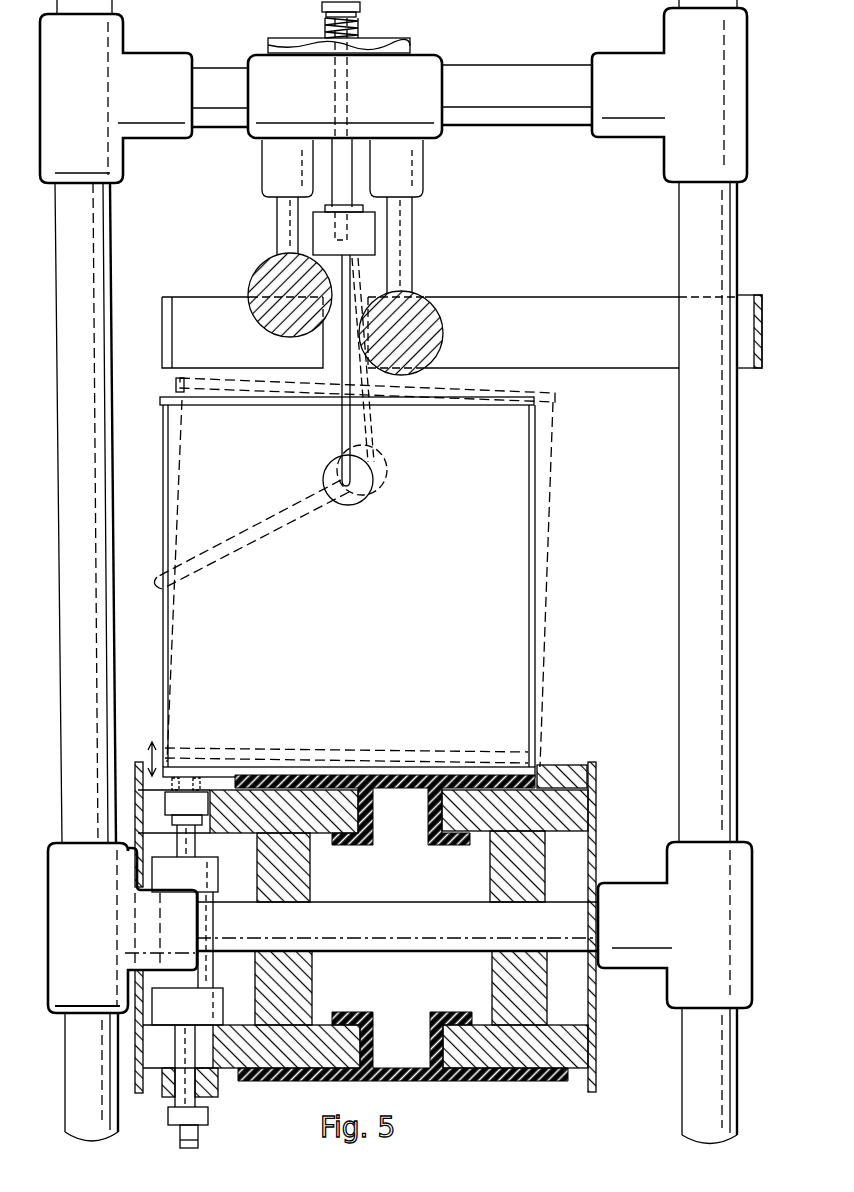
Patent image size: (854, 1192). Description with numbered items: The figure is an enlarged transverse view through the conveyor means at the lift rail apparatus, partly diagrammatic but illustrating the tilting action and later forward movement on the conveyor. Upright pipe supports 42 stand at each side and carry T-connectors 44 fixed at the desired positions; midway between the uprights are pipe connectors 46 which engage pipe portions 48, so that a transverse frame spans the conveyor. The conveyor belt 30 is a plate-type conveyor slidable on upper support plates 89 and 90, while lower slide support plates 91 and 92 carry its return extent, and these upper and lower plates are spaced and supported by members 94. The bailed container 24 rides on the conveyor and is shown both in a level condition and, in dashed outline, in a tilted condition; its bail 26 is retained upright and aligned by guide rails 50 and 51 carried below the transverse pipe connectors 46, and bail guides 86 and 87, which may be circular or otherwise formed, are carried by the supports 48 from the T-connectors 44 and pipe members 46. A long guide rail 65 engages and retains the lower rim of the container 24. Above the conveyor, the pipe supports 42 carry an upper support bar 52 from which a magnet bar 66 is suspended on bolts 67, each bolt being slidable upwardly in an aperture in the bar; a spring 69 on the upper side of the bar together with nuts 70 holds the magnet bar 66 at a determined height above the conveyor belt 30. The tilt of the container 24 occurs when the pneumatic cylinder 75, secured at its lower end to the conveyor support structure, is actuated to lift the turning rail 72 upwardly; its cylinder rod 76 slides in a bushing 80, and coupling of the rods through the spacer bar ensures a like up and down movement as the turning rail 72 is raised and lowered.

The bailed container 24 is at (510, 512).
The bail 26 is at (345, 425).
The conveyor belt 30 is at (390, 780).
The upright pipe support 42 is at (100, 528).
The T-connector 44 is at (650, 127).
The pipe connector 46 is at (268, 100).
The pipe portion 48 is at (515, 113).
The guide rail 50 is at (417, 300).
The guide rail 51 is at (265, 275).
The upper support bar 52 is at (410, 41).
The guide rail 65 is at (547, 768).
The magnet bar 66 is at (322, 233).
The bolt 67 is at (340, 178).
The spring 69 is at (323, 25).
The nut 70 is at (358, 4).
The turning rail 72 is at (183, 790).
The pneumatic cylinder 75 is at (200, 977).
The cylinder rod 76 is at (182, 1090).
The bushing 80 is at (212, 1092).
The bail guide 86 is at (187, 307).
The bail guide 87 is at (549, 310).
The upper support plate 89 is at (313, 822).
The upper support plate 90 is at (487, 823).
The lower slide support plate 91 is at (316, 1030).
The lower slide support plate 92 is at (488, 1030).
The spacing member 94 is at (303, 883).